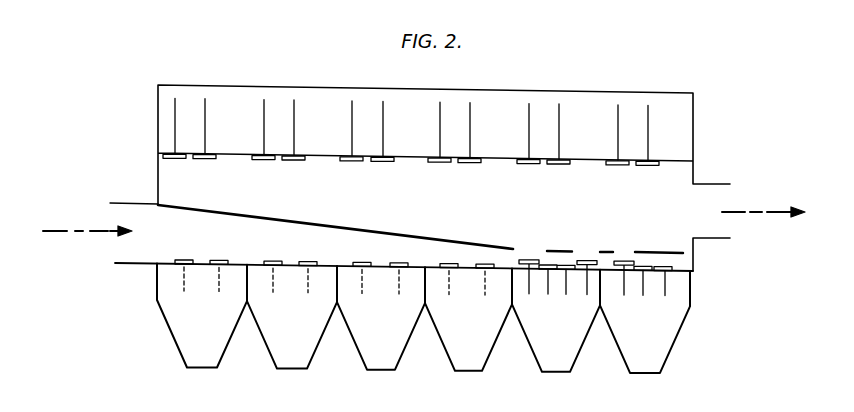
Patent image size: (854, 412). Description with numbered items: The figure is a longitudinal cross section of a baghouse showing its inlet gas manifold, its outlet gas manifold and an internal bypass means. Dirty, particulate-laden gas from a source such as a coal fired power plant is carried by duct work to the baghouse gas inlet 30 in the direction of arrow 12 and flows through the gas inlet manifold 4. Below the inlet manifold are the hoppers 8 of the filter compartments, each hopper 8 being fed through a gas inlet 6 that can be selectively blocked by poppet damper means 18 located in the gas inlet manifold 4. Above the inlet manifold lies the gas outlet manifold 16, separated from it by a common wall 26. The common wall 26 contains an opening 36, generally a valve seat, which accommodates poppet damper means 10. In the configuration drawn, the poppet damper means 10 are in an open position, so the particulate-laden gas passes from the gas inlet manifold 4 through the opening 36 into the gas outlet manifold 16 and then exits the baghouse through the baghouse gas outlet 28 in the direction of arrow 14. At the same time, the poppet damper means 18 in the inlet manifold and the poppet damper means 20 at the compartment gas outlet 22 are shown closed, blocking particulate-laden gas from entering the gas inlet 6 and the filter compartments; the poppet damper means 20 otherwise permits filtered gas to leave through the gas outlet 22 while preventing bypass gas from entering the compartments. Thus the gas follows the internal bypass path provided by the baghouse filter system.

The gas inlet manifold 4 is at (213, 242).
The gas inlet 6 is at (275, 268).
The hopper 8 is at (191, 334).
The poppet damper means 10 is at (533, 258).
The arrow 12 is at (59, 231).
The arrow 14 is at (778, 209).
The gas outlet manifold 16 is at (406, 196).
The poppet damper means 18 is at (277, 263).
The poppet damper means 20 is at (209, 160).
The gas outlet 22 is at (166, 133).
The common wall 26 is at (325, 224).
The baghouse gas outlet 28 is at (717, 240).
The baghouse gas inlet 30 is at (143, 265).
The opening 36 is at (513, 250).